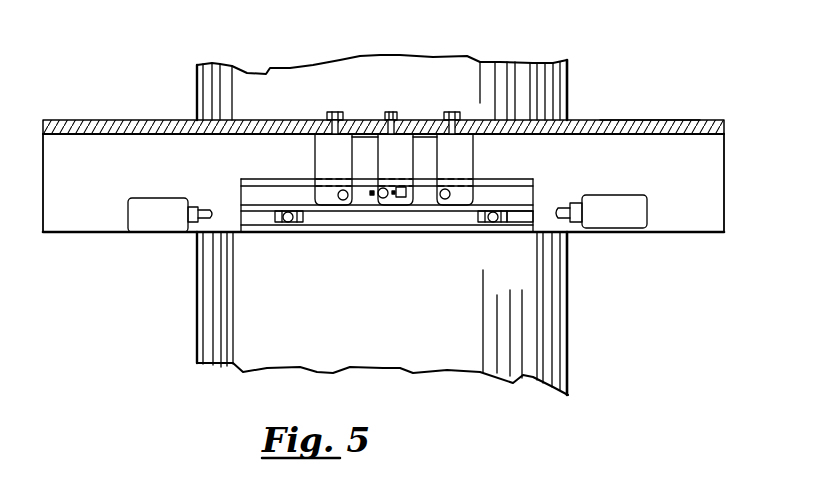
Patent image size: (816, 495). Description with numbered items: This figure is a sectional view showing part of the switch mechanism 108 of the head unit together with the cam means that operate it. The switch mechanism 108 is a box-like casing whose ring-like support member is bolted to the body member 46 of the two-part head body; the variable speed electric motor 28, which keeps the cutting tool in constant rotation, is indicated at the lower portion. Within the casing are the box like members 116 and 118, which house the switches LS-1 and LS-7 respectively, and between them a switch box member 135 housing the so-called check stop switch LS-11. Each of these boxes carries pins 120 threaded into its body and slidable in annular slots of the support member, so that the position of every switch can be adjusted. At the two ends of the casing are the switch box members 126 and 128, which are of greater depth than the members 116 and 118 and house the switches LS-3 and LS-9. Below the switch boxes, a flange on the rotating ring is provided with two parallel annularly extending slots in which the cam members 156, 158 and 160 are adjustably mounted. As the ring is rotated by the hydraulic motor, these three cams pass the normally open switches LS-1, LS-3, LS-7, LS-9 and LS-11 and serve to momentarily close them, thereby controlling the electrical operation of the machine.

The body member part 46 is at (551, 80).
The variable speed electric motor 28 is at (545, 333).
The switch mechanism 108 is at (647, 120).
The pins 120 is at (332, 112).
The box like member 116 is at (320, 158).
The switch box member 135 is at (382, 147).
The box like member 118 is at (463, 160).
The switch LS-1 is at (342, 201).
The cam member 158 is at (371, 198).
The check stop switch LS-11 is at (383, 199).
The switch LS-7 is at (445, 200).
The cam member 156 is at (284, 224).
The cam member 160 is at (493, 223).
The switch box member 126 is at (140, 212).
The switch LS-3 is at (205, 217).
The switch box member 128 is at (633, 205).
The switch LS-9 is at (567, 219).